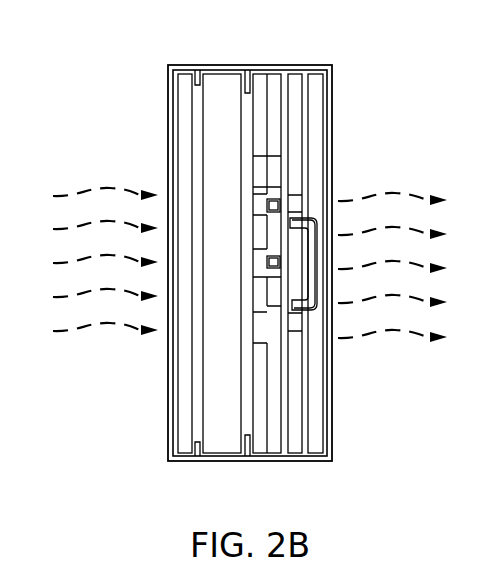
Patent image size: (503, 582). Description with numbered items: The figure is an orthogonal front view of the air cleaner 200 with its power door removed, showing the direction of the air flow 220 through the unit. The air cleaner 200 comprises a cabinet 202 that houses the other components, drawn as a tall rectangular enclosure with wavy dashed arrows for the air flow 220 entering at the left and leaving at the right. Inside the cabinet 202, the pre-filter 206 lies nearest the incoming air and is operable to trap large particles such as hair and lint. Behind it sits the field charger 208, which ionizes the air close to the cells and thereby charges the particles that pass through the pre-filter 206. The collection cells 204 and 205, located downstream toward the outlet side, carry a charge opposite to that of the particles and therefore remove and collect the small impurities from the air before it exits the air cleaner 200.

The air cleaner 200 is at (147, 82).
The cabinet 202 is at (333, 137).
The collection cell 204 is at (273, 457).
The collection cell 205 is at (300, 457).
The pre-filter 206 is at (177, 378).
The field charger 208 is at (214, 457).
The air flow 220 is at (92, 189).